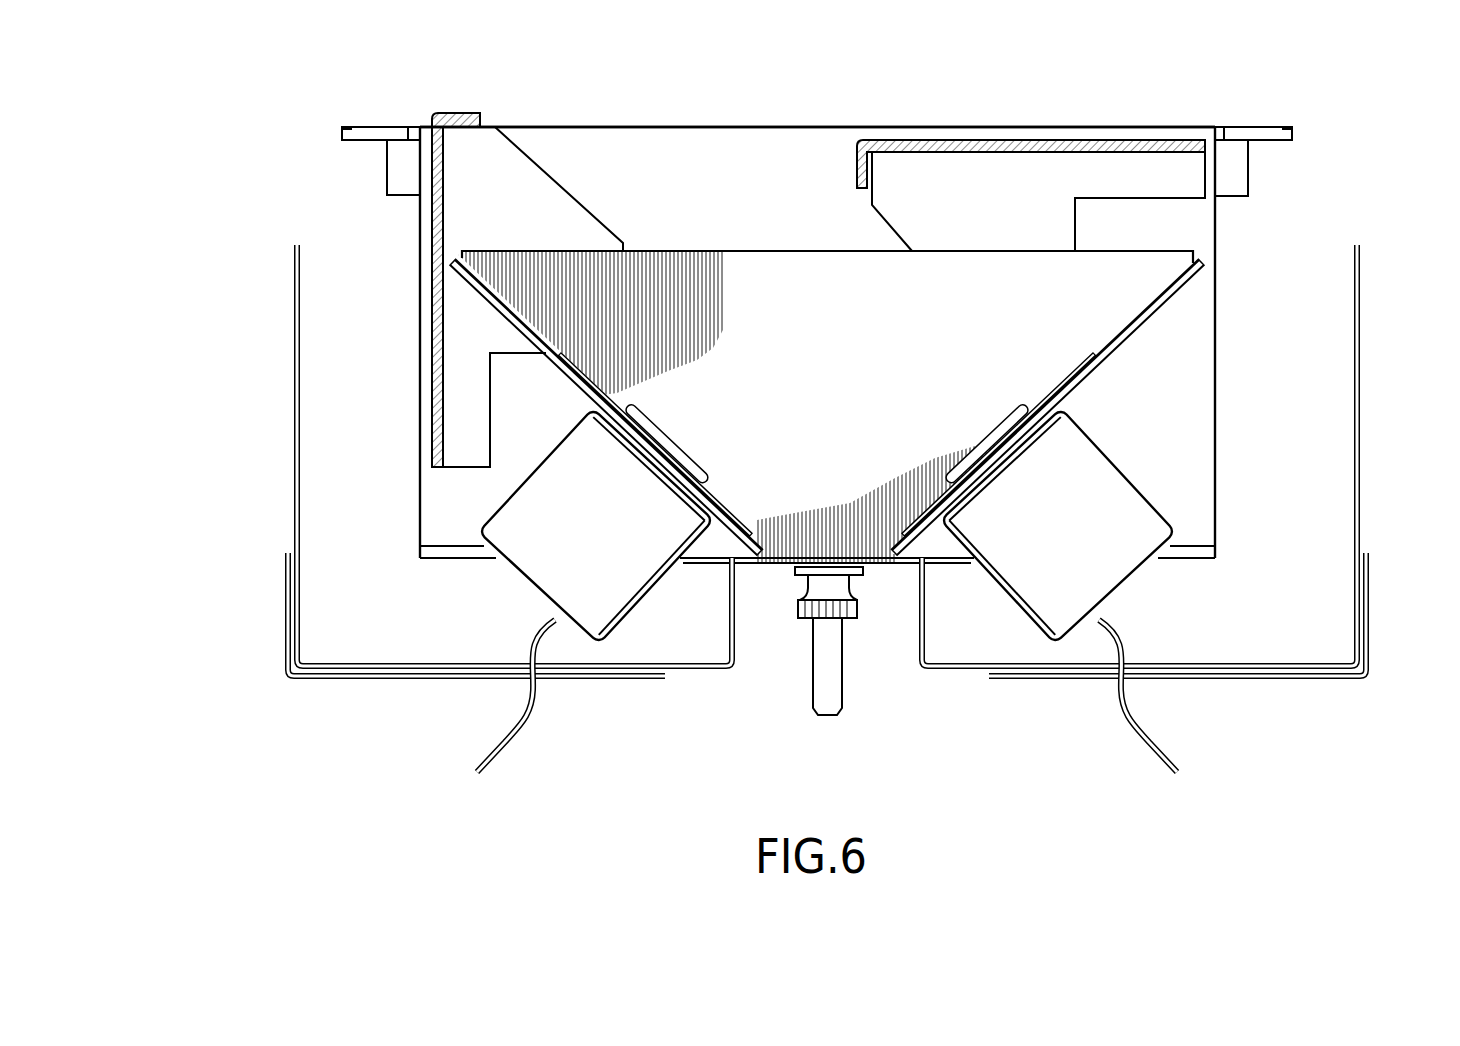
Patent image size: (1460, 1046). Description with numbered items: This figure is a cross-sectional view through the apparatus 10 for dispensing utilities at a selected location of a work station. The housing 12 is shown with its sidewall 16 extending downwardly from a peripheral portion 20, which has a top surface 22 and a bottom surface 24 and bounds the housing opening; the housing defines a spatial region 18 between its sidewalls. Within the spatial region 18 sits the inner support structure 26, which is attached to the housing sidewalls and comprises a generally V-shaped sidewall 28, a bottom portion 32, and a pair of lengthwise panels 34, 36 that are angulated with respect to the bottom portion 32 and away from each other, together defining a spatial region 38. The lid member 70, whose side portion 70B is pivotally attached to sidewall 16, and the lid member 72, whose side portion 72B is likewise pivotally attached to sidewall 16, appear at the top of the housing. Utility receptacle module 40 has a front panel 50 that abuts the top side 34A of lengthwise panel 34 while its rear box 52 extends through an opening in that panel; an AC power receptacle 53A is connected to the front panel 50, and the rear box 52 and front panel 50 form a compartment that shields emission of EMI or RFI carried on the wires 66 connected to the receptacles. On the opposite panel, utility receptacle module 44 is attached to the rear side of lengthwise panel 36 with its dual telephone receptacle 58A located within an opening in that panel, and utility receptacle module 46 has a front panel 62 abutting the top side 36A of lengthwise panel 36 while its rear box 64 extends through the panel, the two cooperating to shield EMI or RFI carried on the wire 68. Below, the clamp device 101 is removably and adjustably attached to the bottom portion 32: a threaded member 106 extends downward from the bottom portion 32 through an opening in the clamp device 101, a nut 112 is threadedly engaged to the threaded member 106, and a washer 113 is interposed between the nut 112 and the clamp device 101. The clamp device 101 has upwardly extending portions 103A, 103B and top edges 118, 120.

The apparatus 10 is at (207, 168).
The housing 12 is at (342, 124).
The sidewall 16 is at (793, 125).
The spatial region 18 is at (610, 153).
The peripheral portion 20 is at (368, 126).
The top surface 22 is at (350, 122).
The bottom surface 24 is at (353, 142).
The inner support structure 26 is at (760, 250).
The sidewall 28 is at (830, 280).
The bottom portion 32 is at (815, 556).
The lengthwise panel 34 is at (1152, 305).
The top side 34A is at (1128, 325).
The lengthwise panel 36 is at (530, 330).
The top side 36A is at (487, 287).
The spatial region 38 is at (700, 323).
The utility receptacle module 40 is at (1098, 440).
The utility receptacle module 44 is at (590, 377).
The utility receptacle module 46 is at (527, 597).
The front panel 50 is at (1063, 383).
The rear box 52 is at (1160, 493).
The utility receptacle 53A is at (968, 448).
The utility receptacle 58A is at (664, 437).
The front panel 62 is at (718, 518).
The rear box 64 is at (635, 598).
The wires 66 is at (1133, 647).
The wire 68 is at (520, 730).
The lid member 70 is at (1056, 138).
The side portion 70B is at (938, 172).
The lid member 72 is at (456, 113).
The side portion 72B is at (510, 182).
The clamp device 101 is at (295, 427).
The upwardly extending portion 103A is at (292, 327).
The upwardly extending portion 103B is at (1367, 437).
The threaded member 106 is at (843, 700).
The nut 112 is at (800, 605).
The washer 113 is at (862, 575).
The top edge 118 is at (1357, 245).
The top edge 120 is at (294, 245).